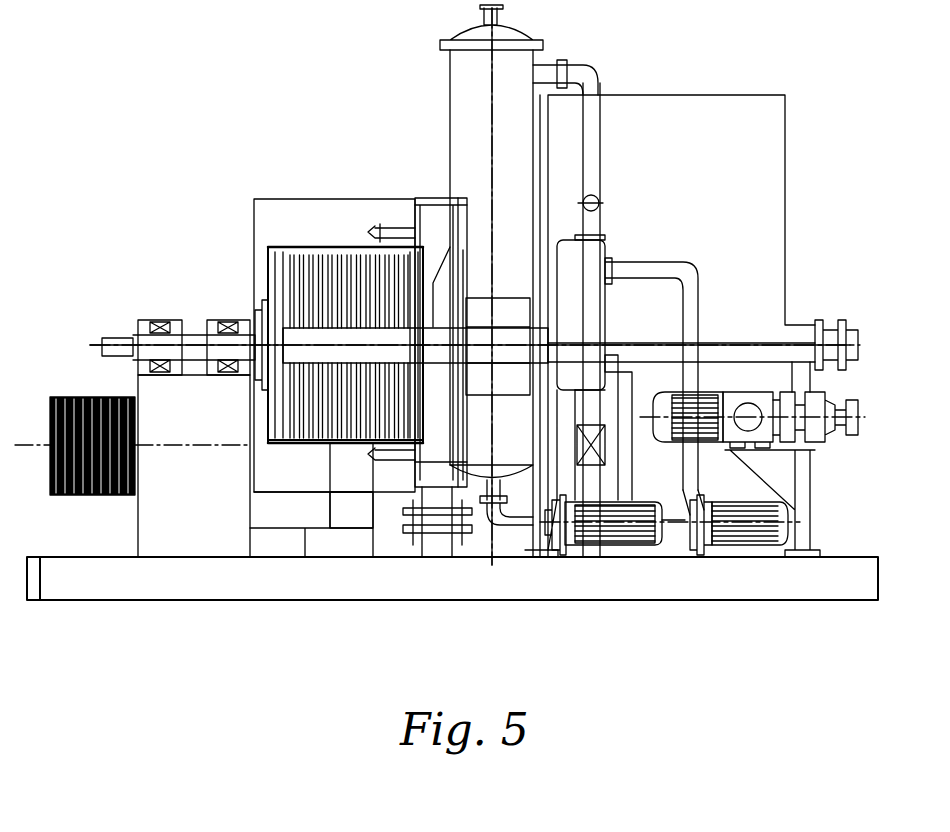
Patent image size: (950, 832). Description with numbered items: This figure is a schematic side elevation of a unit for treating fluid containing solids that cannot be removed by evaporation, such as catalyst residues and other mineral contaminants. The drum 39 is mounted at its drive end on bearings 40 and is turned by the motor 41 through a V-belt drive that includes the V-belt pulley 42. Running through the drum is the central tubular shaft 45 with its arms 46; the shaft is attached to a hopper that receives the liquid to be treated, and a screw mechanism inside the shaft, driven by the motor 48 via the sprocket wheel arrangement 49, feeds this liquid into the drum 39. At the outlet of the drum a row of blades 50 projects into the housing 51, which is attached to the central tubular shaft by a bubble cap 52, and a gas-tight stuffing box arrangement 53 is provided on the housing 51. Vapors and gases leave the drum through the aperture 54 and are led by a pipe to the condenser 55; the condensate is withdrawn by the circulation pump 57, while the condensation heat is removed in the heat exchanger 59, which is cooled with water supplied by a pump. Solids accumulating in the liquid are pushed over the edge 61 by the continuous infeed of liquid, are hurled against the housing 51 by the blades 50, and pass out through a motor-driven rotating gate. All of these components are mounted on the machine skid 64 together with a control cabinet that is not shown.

The drum 39 is at (282, 230).
The bearings 40 is at (222, 318).
The motor 41 is at (355, 522).
The V-belt pulley 42 is at (95, 495).
The central tubular shaft 45 is at (337, 252).
The arms 46 is at (310, 250).
The motor 48 is at (845, 443).
The sprocket wheel arrangement 49 is at (848, 340).
The blades 50 is at (430, 222).
The housing 51 is at (437, 198).
The bubble cap 52 is at (508, 307).
The gas-tight stuffing box arrangement 53 is at (387, 228).
The aperture 54 is at (478, 250).
The condenser 55 is at (510, 58).
The circulation pump 57 is at (582, 548).
The heat exchanger 59 is at (600, 256).
The edge 61 is at (357, 445).
The machine skid 64 is at (168, 590).